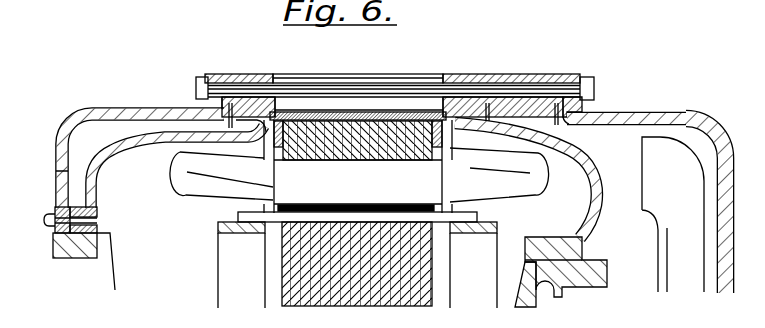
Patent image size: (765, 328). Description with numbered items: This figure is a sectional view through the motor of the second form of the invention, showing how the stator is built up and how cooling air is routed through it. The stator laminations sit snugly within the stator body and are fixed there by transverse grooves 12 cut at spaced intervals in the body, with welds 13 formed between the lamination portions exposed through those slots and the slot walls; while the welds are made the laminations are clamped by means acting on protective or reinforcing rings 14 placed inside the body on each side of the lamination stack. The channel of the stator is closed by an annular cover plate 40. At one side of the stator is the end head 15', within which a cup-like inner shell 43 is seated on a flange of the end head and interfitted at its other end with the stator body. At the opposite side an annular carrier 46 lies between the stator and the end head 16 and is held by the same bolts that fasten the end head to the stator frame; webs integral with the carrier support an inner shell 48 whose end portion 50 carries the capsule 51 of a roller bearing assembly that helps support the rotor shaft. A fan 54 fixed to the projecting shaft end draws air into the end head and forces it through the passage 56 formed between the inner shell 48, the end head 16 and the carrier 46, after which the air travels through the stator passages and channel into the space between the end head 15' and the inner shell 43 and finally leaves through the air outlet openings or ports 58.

The transverse grooves 12 is at (363, 112).
The welds 13 is at (398, 113).
The protective or reinforcing rings 14 is at (254, 160).
The end head 15' is at (140, 142).
The end head 16 is at (682, 118).
The annular cover plate 40 is at (307, 73).
The cup-like inner shell 43 is at (130, 150).
The annular carrier 46 is at (335, 110).
The inner shell 48 is at (582, 172).
The end portion of the inner shell 50 is at (575, 219).
The capsule 51 is at (520, 278).
The fan 54 is at (673, 214).
The passage 56 is at (604, 132).
The air outlet openings or ports 58 is at (62, 190).